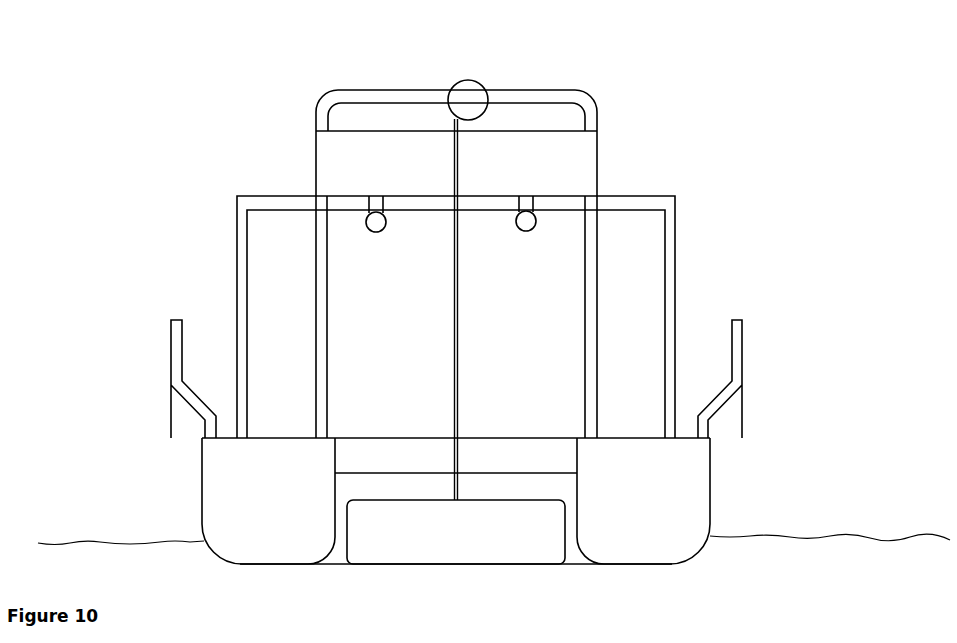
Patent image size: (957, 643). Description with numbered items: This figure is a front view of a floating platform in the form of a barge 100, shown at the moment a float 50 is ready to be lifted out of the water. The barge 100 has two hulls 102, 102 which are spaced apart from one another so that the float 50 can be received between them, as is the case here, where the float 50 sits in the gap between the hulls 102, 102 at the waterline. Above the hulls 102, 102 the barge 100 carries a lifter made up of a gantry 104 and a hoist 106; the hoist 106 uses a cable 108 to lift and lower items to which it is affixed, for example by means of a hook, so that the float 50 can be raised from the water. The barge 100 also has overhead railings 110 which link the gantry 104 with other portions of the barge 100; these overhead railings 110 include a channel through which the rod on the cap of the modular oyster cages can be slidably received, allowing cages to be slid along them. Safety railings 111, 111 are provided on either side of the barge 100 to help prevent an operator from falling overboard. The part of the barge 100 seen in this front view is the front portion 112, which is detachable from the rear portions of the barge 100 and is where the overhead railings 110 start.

The barge 100 is at (210, 157).
The hull 102 is at (258, 528).
The gantry 104 is at (582, 99).
The hoist 106 is at (469, 100).
The cable 108 is at (457, 341).
The overhead railings 110 is at (531, 219).
The safety railings 111 is at (736, 340).
The front portion 112 is at (153, 502).
The float 50 is at (405, 549).